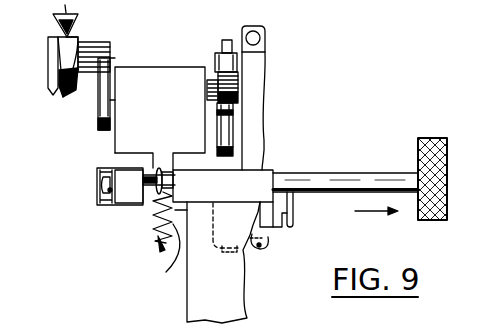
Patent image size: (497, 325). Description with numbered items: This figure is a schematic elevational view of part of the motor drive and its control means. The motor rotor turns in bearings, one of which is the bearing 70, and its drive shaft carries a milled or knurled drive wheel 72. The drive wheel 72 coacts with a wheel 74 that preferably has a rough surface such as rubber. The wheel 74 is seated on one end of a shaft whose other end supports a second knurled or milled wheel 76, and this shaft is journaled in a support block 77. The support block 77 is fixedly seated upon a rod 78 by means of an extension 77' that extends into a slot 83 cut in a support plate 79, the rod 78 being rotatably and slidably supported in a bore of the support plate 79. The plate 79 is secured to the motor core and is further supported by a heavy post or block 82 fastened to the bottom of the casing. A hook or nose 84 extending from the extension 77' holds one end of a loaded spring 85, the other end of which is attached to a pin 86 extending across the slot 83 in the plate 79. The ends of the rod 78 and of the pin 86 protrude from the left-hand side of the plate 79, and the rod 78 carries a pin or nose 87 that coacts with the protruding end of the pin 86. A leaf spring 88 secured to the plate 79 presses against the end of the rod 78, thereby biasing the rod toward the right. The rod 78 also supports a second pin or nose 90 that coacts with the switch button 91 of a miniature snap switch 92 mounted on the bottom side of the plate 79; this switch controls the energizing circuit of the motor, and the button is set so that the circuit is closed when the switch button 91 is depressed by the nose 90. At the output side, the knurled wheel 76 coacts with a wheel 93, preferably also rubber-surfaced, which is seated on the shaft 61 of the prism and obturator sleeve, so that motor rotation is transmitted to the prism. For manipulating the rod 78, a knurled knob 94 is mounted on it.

The bearing 70 is at (50, 47).
The knurled drive wheel 72 is at (94, 42).
The wheel 74 is at (98, 122).
The second knurled wheel 76 is at (240, 108).
The support block 77 is at (166, 102).
The extension 77' is at (105, 169).
The rod 78 is at (355, 173).
The support plate 79 is at (268, 170).
The post 82 is at (197, 290).
The slot 83 is at (152, 200).
The hook 84 is at (162, 249).
The loaded spring 85 is at (172, 240).
The pin 86 is at (176, 179).
The nose 87 is at (100, 196).
The leaf spring 88 is at (97, 178).
The second nose 90 is at (294, 209).
The switch button 91 is at (282, 225).
The snap switch 92 is at (263, 250).
The wheel 93 is at (223, 40).
The knurled knob 94 is at (430, 138).
The shaft 61 is at (248, 95).